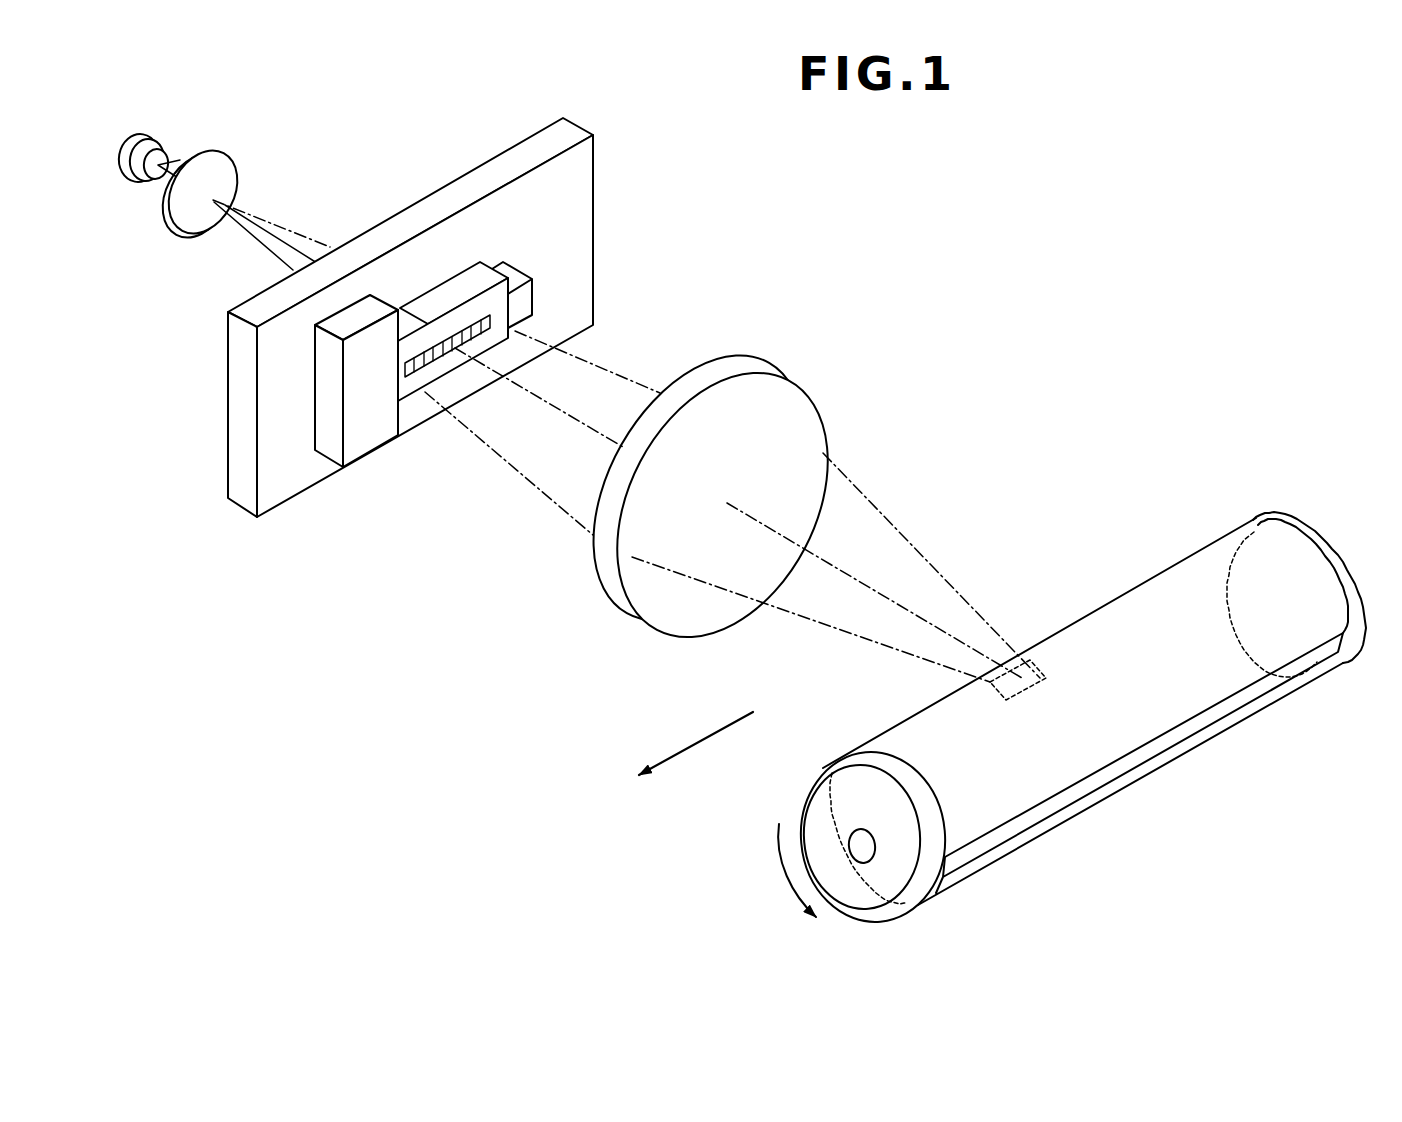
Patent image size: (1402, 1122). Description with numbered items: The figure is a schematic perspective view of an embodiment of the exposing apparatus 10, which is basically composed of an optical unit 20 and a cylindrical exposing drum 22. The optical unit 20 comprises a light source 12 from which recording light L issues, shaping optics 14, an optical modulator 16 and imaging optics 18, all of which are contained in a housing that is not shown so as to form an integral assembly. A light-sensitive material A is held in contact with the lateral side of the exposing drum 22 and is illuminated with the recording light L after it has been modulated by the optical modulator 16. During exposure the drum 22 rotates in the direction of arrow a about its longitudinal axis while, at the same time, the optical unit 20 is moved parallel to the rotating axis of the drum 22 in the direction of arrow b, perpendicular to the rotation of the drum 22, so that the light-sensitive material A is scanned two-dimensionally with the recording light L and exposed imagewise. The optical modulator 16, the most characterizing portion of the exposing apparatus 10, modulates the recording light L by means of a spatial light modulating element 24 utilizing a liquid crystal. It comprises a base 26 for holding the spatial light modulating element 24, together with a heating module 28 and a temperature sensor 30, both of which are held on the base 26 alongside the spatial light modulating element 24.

The exposing apparatus 10 is at (322, 720).
The light source 12 is at (167, 155).
The shaping optics 14 is at (222, 183).
The optical modulator 16 is at (627, 192).
The imaging optics 18 is at (804, 406).
The optical unit 20 is at (828, 264).
The exposing drum 22 is at (820, 785).
The spatial light modulating element 24 is at (450, 298).
The base 26 is at (523, 197).
The heating module 28 is at (371, 437).
The temperature sensor 30 is at (521, 298).
The recording light L is at (932, 556).
The light-sensitive material A is at (1162, 593).
The arrow a (drum rotation direction) a is at (778, 856).
The arrow b (optical unit movement direction) b is at (697, 742).